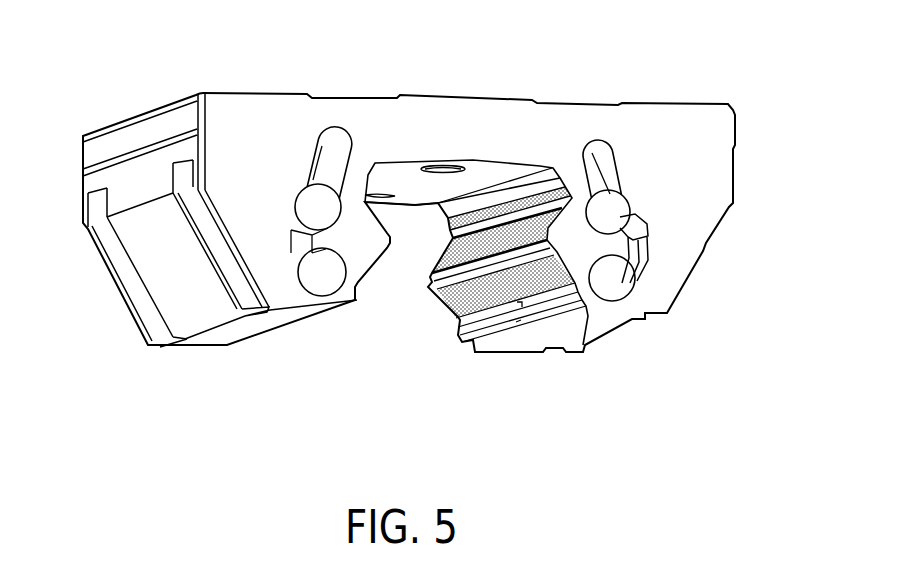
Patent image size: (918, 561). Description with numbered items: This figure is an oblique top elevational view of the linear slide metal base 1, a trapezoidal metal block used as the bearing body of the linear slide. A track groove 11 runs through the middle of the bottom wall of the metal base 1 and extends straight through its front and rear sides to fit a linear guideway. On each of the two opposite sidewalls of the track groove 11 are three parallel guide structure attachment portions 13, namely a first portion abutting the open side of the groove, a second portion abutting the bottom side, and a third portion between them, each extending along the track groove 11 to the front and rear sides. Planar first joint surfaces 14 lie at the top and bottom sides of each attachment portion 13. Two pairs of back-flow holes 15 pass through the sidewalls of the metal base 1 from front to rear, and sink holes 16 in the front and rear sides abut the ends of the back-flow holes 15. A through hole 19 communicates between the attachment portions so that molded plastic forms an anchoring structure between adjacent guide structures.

The metal base 1 is at (463, 120).
The track groove 11 is at (402, 183).
The guide structure attachment portion 13 is at (553, 207).
The first joint surface 14 is at (522, 190).
The back-flow hole 15 is at (308, 205).
The sink hole 16 is at (322, 150).
The through hole 19 is at (523, 323).